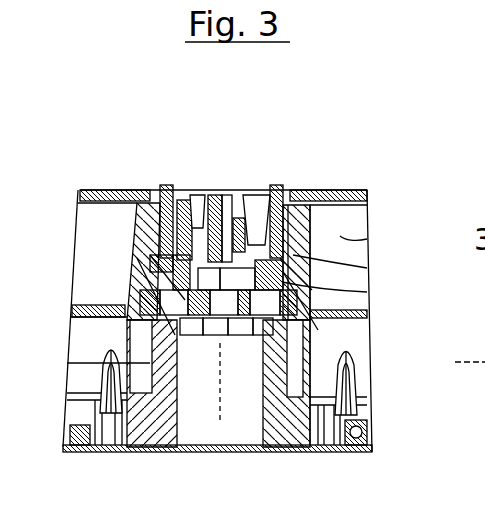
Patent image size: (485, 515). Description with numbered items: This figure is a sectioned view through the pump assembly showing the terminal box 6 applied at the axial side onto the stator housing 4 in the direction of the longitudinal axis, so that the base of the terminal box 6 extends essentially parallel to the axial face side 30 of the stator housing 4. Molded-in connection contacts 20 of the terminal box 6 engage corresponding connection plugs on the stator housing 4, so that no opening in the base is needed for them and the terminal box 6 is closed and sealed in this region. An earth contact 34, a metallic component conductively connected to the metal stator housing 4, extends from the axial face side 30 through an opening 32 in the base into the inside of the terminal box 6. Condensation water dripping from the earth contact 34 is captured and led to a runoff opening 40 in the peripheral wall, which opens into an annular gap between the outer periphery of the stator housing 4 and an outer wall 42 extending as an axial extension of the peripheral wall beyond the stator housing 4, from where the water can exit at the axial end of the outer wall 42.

The stator housing 4 is at (67, 363).
The terminal box 6 is at (367, 239).
The connection contacts 20 is at (197, 190).
The axial face side 30 is at (130, 190).
The opening 32 is at (367, 292).
The earth contact 34 is at (297, 190).
The runoff opening 40 is at (367, 268).
The outer wall 42 is at (350, 378).